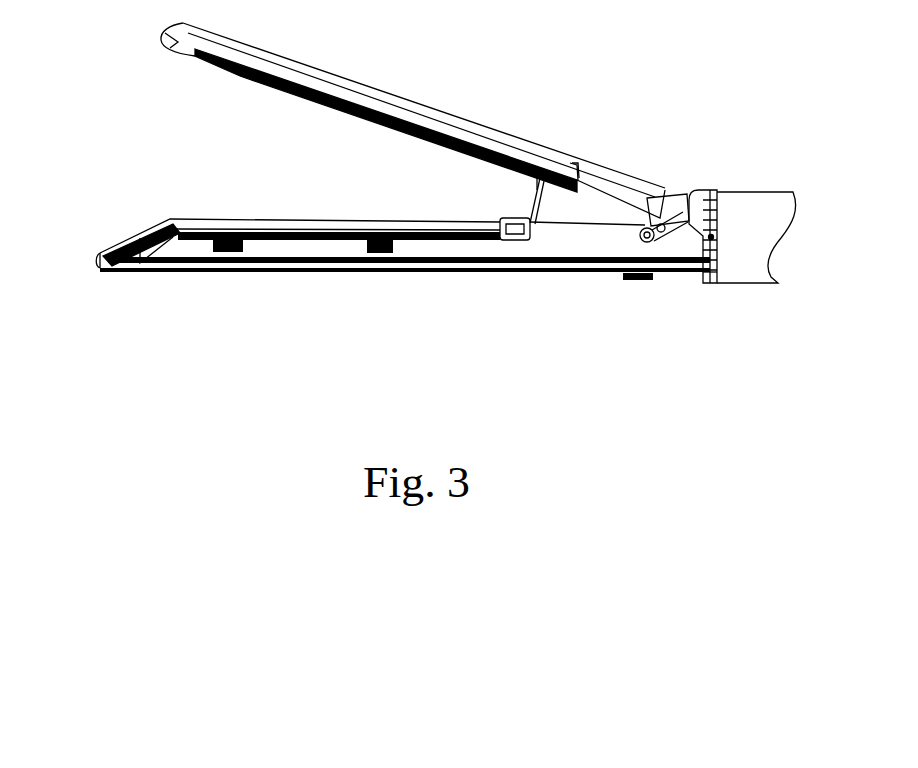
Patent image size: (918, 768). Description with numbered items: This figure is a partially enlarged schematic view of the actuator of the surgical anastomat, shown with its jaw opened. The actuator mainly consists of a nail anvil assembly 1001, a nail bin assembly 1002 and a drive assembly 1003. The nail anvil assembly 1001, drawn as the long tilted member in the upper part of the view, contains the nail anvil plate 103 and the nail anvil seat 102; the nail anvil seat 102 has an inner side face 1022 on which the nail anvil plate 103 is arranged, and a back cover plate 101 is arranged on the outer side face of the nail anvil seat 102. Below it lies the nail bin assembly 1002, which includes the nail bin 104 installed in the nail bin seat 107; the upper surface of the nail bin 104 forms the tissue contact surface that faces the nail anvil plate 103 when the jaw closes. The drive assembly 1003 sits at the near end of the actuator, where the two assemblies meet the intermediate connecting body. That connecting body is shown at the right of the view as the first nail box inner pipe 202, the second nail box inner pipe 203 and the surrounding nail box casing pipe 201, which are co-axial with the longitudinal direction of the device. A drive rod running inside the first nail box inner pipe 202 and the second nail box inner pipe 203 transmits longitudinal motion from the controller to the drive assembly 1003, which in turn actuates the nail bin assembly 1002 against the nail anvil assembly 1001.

The back cover plate 101 is at (608, 183).
The nail anvil seat 102 is at (296, 62).
The nail anvil plate 103 is at (317, 83).
The nail bin 104 is at (122, 238).
The nail bin seat 107 is at (270, 246).
The nail box casing pipe 201 is at (745, 260).
The first nail box inner pipe 202 is at (710, 282).
The second nail box inner pipe 203 is at (707, 200).
The nail anvil assembly 1001 is at (364, 119).
The nail bin assembly 1002 is at (379, 254).
The drive assembly 1003 is at (633, 289).
The inner side face 1022 is at (178, 40).